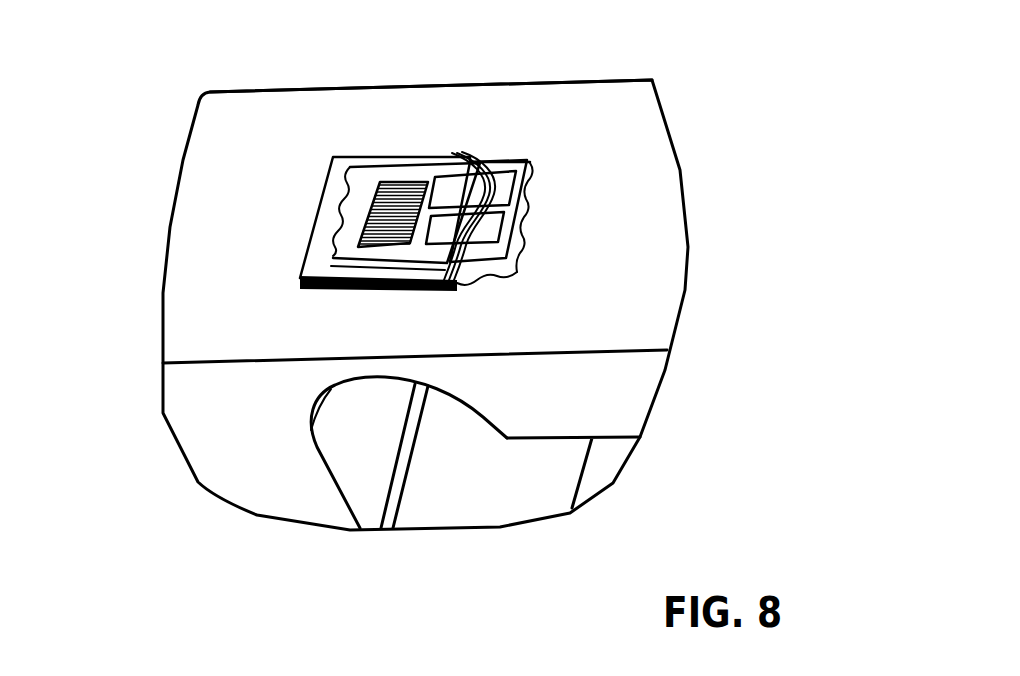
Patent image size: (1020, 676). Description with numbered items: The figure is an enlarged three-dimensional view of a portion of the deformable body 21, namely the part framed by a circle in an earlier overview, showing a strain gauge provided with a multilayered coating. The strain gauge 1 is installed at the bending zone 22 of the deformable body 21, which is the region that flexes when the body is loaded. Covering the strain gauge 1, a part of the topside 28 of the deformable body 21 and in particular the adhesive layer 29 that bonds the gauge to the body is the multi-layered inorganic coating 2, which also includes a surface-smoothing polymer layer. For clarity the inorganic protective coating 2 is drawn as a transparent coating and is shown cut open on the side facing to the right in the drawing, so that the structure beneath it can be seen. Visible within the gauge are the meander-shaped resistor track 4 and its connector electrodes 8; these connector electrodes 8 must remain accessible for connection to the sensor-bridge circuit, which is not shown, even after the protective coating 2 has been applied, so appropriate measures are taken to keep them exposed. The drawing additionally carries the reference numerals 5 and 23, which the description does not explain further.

The strain gauge 1 is at (413, 148).
The multi-layered inorganic coating 2 is at (327, 183).
The meander-shaped resistor track 4 is at (383, 183).
The substrate 5 is at (360, 177).
The connector electrodes 8 is at (445, 223).
The deformable body 21 is at (672, 380).
The bending zone 22 is at (372, 362).
The opening in housing 23 is at (437, 463).
The topside 28 is at (558, 113).
The adhesive layer 29 is at (320, 253).